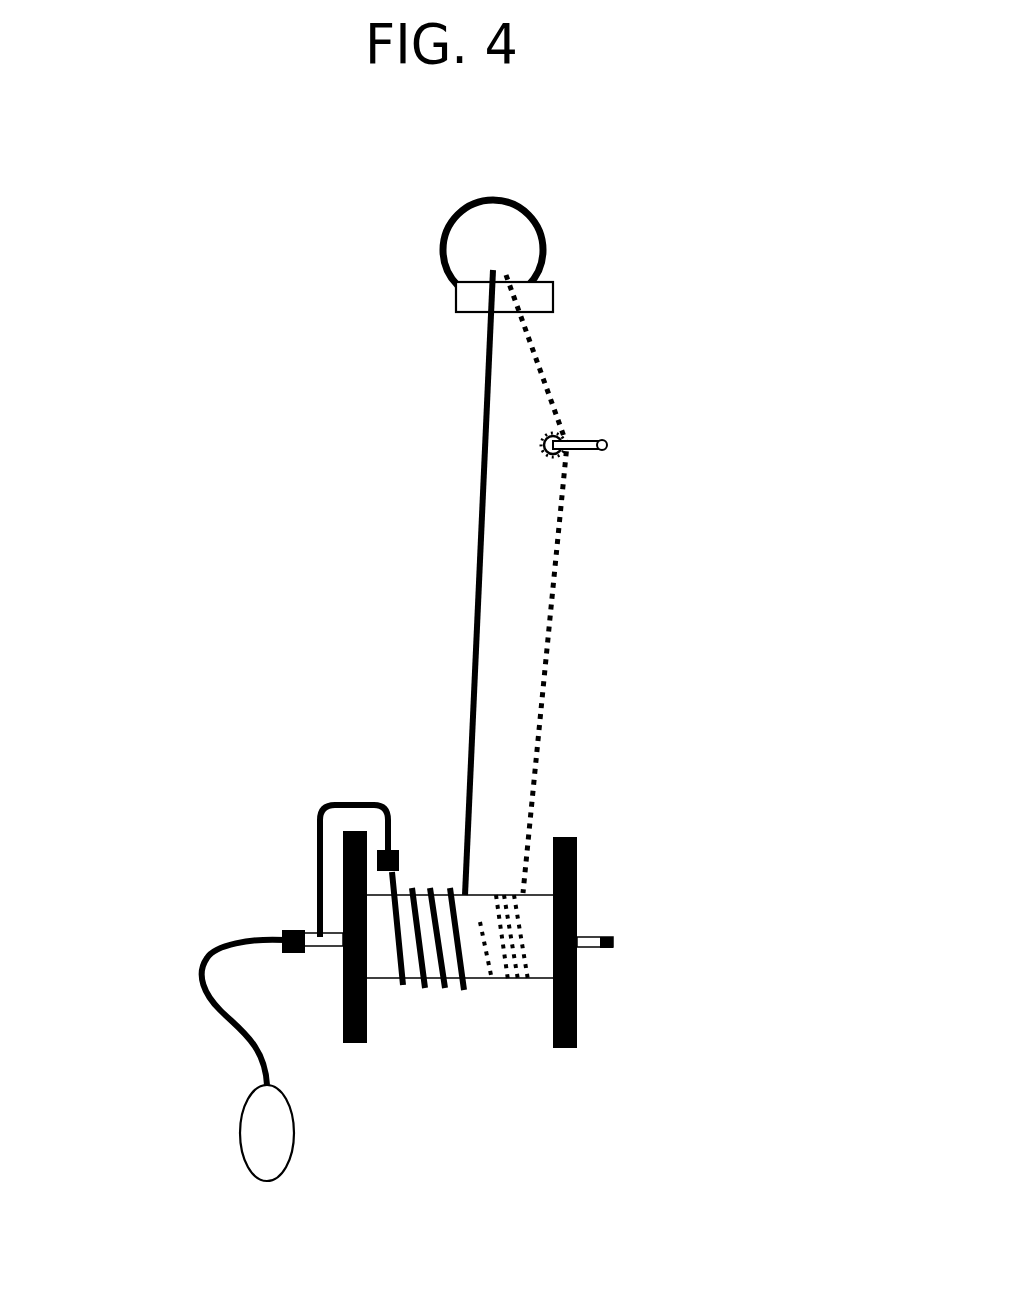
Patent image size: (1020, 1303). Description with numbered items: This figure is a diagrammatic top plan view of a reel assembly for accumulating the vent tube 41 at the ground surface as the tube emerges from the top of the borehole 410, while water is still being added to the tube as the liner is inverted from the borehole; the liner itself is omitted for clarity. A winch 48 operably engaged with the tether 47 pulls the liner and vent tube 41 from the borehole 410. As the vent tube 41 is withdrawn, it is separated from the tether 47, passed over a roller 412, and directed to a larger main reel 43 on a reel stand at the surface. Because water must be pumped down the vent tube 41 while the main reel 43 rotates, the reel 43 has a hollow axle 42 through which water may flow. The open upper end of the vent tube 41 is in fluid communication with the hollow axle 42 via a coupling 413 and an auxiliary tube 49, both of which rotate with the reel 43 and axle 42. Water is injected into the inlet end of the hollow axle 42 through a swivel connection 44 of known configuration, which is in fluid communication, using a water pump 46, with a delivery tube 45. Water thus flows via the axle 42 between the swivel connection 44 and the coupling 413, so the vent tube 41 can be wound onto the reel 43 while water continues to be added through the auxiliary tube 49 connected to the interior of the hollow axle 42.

The borehole 410 is at (517, 202).
The roller 412 is at (553, 294).
The vent tube 41 is at (485, 388).
The tether 47 is at (555, 385).
The winch 48 is at (560, 457).
The coupling 413 is at (400, 860).
The auxiliary tube 49 is at (347, 803).
The swivel connection 44 is at (292, 928).
The delivery tube 45 is at (212, 955).
The water pump 46 is at (240, 1138).
The hollow axle 42 is at (598, 937).
The main reel 43 is at (380, 958).